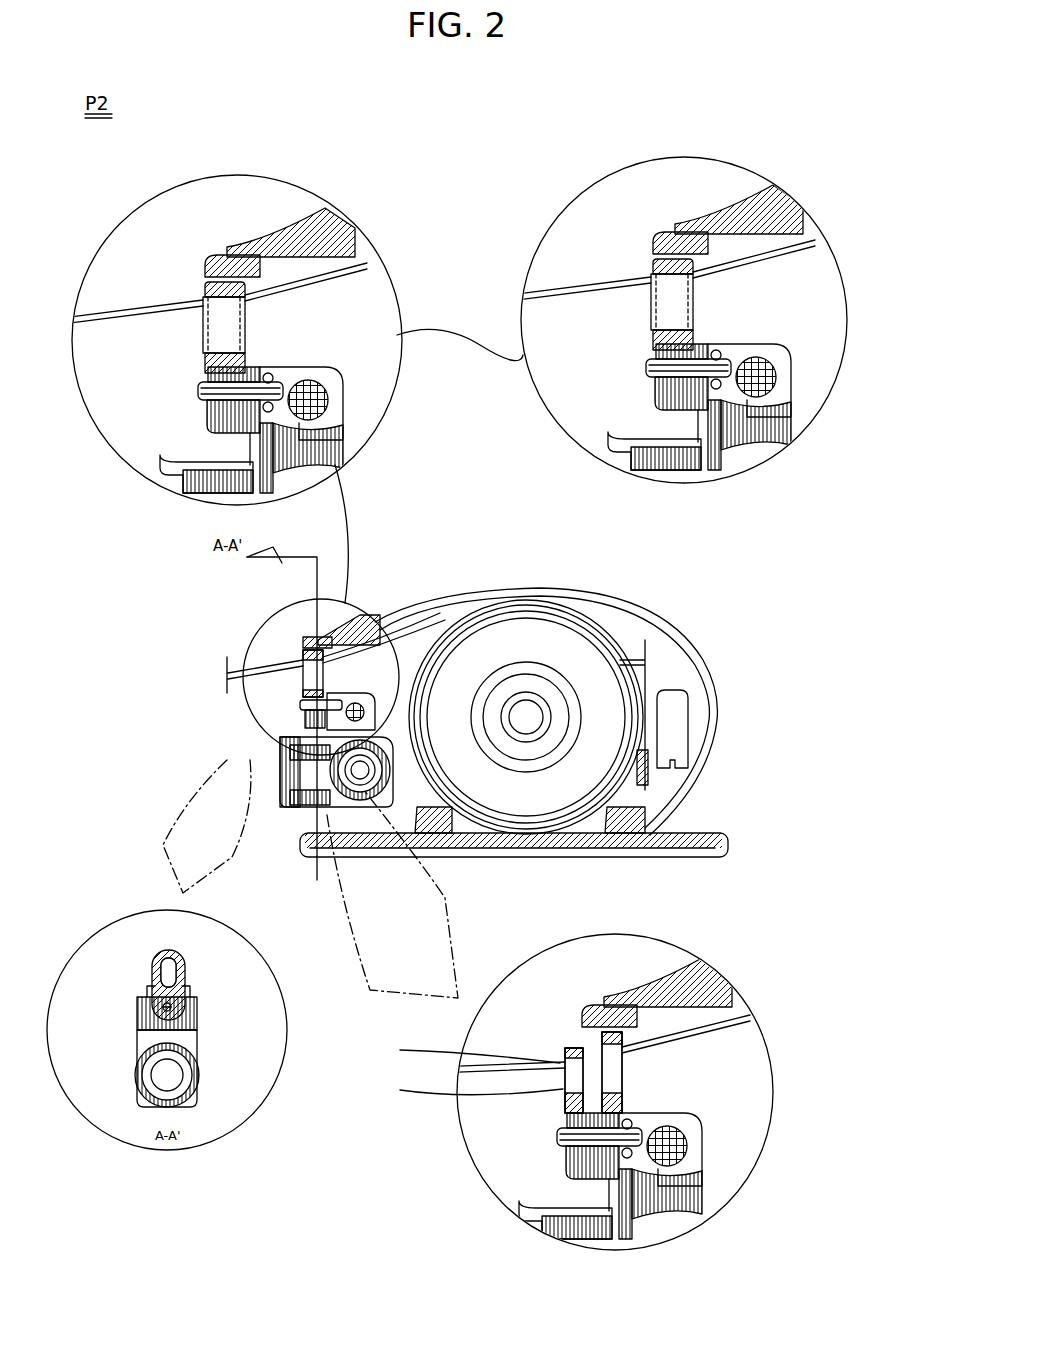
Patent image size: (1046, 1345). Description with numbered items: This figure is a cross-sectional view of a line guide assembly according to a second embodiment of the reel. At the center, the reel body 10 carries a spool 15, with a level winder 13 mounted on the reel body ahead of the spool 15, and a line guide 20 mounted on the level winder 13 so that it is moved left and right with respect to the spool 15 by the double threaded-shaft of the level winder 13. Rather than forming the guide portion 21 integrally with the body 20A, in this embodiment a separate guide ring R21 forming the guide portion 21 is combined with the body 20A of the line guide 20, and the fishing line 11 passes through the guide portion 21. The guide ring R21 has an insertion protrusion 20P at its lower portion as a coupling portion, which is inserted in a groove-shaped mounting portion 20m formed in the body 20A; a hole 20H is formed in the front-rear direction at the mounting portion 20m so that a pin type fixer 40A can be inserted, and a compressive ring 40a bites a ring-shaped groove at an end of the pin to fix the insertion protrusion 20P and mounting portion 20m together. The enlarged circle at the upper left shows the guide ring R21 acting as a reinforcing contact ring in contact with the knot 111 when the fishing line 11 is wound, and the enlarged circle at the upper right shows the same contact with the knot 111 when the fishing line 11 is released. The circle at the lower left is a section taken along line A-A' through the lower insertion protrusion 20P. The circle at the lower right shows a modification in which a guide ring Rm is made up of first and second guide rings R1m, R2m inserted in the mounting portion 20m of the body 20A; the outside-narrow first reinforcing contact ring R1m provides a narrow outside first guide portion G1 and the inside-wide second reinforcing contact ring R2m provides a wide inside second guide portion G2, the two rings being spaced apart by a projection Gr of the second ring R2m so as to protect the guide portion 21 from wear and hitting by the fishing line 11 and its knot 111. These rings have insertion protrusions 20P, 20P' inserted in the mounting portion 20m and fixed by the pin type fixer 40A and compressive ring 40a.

The reel body 10 is at (572, 587).
The fishing line 11 is at (323, 208).
The knot 111 is at (203, 297).
The level winder 13 is at (212, 1085).
The spool 15 is at (585, 675).
The line guide 20 is at (700, 335).
The body 20A is at (273, 428).
The hole 20H is at (205, 378).
The mounting portion 20m is at (212, 417).
The insertion protrusion 20P is at (439, 804).
The insertion protrusion 20P' is at (680, 1109).
The guide portion 21 is at (217, 328).
The guide ring R21 is at (223, 355).
The pin type fixer 40A is at (193, 393).
The compressive ring 40a is at (233, 420).
The guide ring Rm is at (645, 876).
The first guide ring R1m is at (573, 1055).
The second guide ring R2m is at (600, 1040).
The projection Gr is at (700, 1082).
The first guide portion G1 is at (466, 1091).
The second guide portion G2 is at (465, 1053).